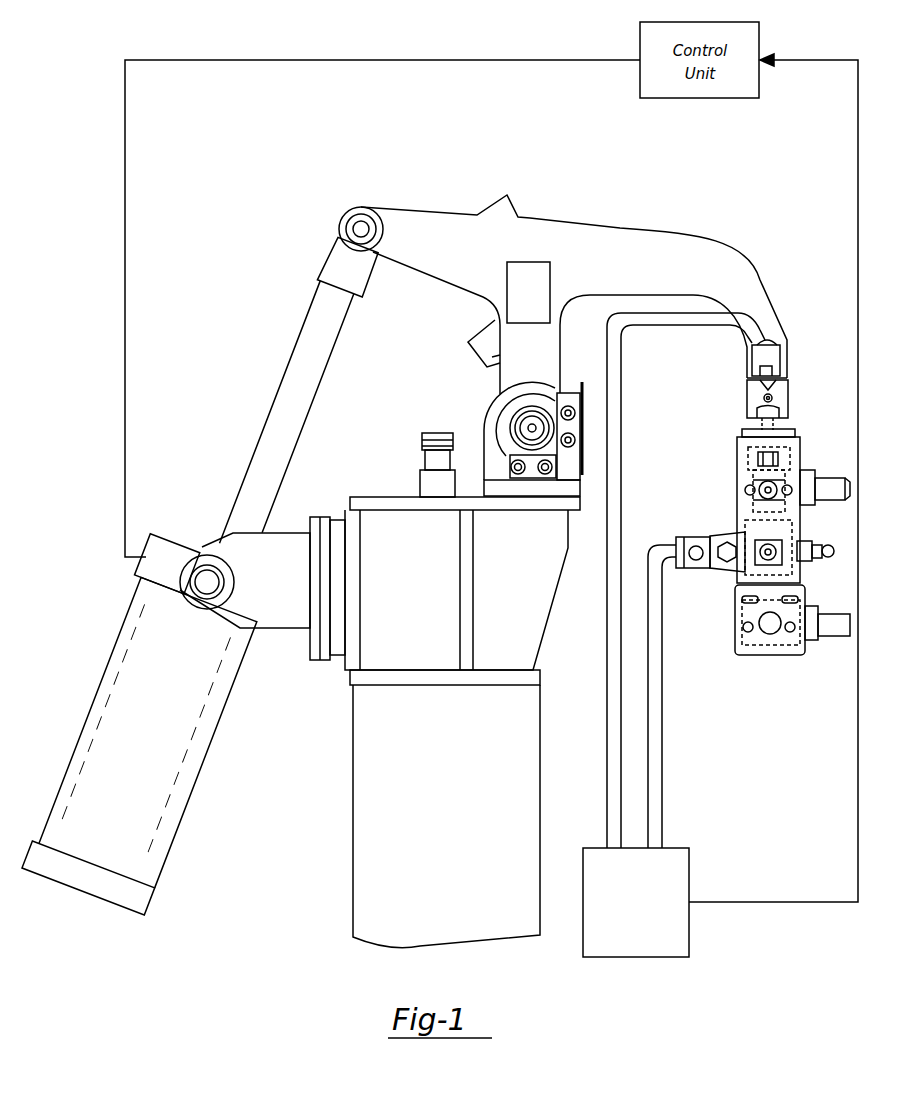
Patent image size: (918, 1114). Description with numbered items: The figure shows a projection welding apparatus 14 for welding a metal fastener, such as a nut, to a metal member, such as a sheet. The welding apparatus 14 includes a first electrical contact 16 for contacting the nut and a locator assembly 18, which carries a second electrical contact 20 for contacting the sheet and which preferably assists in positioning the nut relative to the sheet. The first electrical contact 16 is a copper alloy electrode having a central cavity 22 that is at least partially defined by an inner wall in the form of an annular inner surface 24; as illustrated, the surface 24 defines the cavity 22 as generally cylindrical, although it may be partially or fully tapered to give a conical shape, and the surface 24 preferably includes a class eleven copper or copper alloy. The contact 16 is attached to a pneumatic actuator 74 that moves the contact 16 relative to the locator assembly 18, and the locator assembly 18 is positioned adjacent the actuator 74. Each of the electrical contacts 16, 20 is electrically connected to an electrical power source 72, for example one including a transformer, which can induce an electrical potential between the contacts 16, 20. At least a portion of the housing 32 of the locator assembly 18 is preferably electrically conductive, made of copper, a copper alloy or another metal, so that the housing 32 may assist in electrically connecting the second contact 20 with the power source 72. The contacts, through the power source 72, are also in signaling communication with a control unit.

The projection welding apparatus 14 is at (248, 258).
The pneumatic actuator 74 is at (573, 219).
The first electrical contact 16 is at (752, 392).
The central cavity 22 is at (781, 412).
The inner wall surface 24 is at (752, 417).
The second electrical contact 20 is at (795, 434).
The housing 32 is at (798, 568).
The locator assembly 18 is at (817, 676).
The electrical power source 72 is at (648, 912).